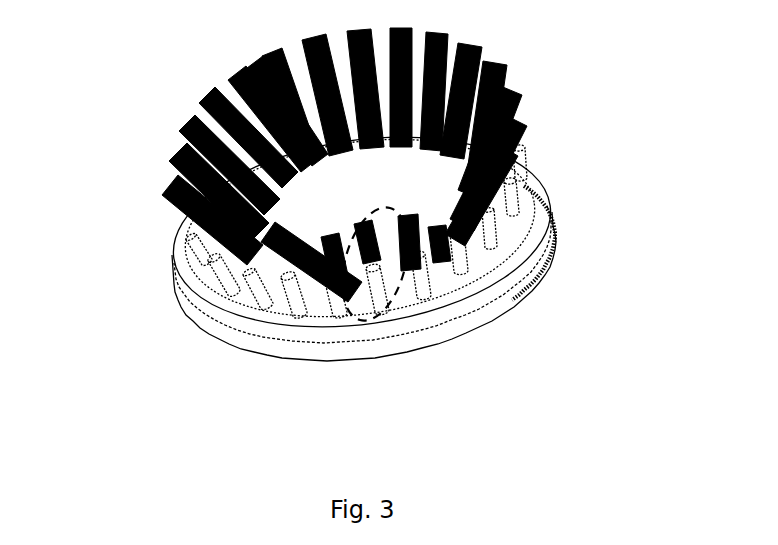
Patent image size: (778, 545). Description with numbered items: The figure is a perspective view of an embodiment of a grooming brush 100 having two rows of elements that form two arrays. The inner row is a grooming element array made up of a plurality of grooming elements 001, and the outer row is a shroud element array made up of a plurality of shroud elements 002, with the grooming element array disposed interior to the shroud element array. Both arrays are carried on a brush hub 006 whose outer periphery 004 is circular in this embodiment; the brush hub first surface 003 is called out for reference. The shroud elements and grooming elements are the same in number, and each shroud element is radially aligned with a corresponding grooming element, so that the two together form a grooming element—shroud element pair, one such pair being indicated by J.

The grooming brush 100 is at (575, 273).
The grooming element 001 is at (441, 266).
The shroud element 002 is at (461, 259).
The brush hub first surface 003 is at (330, 190).
The outer periphery 004 is at (203, 320).
The brush hub 006 is at (541, 201).
The grooming element—shroud element pair J is at (392, 324).